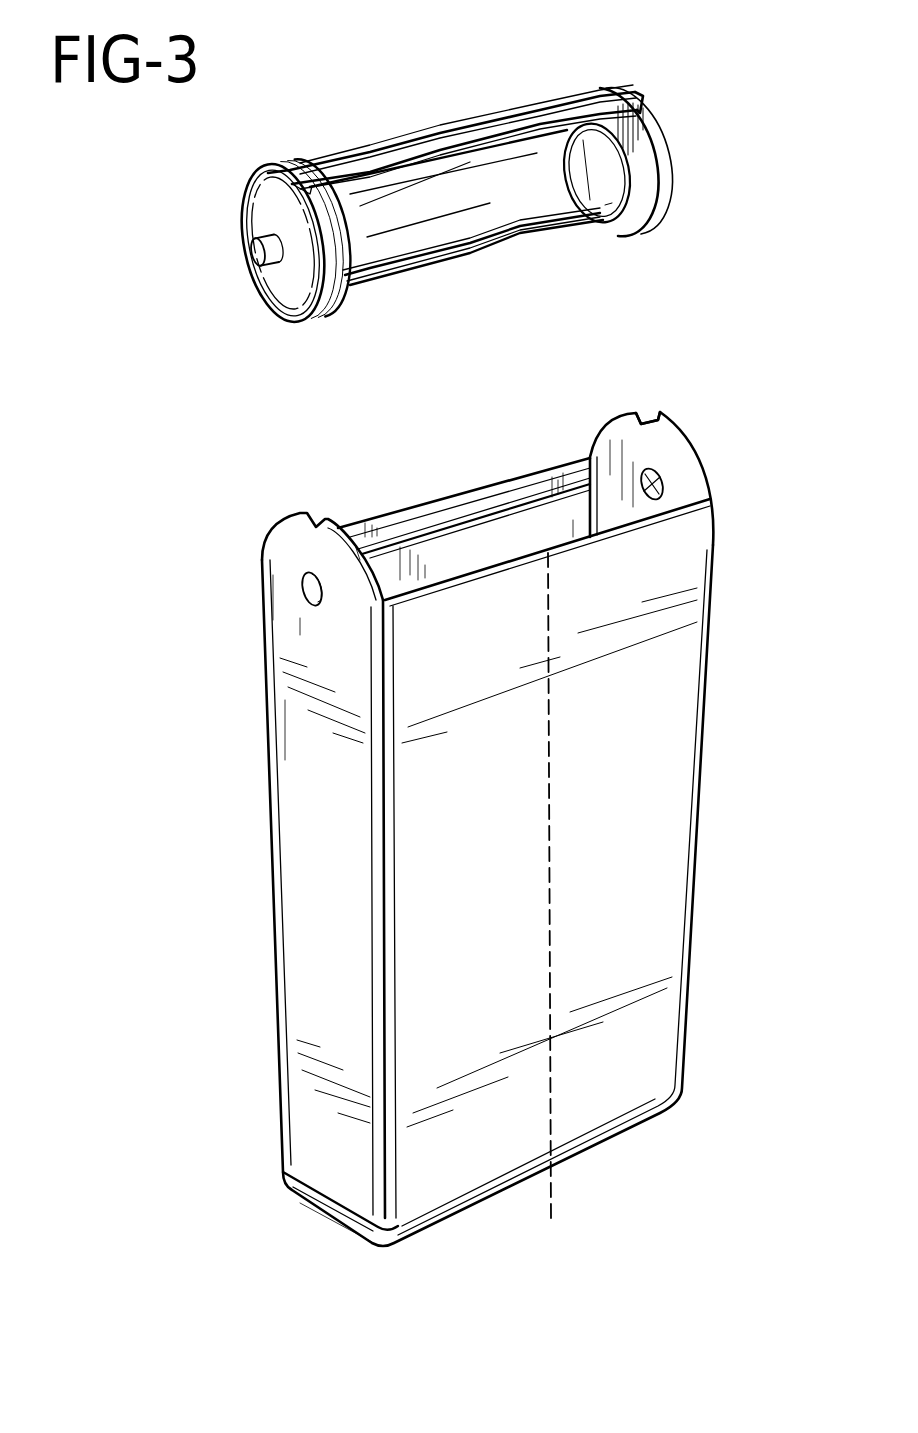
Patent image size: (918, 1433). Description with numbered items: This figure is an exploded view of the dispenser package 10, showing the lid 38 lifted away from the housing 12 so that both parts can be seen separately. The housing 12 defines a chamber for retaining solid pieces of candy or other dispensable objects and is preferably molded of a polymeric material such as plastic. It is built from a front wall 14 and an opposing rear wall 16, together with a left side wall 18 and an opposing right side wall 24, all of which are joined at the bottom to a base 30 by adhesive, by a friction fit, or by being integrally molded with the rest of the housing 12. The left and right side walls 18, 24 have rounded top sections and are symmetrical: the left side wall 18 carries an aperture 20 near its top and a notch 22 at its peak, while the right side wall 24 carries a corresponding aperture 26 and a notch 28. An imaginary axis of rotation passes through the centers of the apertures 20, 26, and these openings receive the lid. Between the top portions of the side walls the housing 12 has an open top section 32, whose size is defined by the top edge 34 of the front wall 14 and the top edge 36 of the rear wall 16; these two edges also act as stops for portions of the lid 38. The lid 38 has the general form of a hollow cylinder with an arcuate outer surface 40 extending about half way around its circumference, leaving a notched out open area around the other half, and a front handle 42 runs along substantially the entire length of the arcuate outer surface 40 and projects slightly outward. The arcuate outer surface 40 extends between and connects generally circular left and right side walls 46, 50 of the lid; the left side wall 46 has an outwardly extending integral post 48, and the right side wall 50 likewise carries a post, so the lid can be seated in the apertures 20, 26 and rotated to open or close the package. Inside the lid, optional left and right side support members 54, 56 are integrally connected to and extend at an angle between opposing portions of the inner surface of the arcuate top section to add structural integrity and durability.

The dispenser package 10 is at (98, 181).
The housing 12 is at (666, 669).
The front wall 14 is at (658, 878).
The rear wall 16 is at (417, 567).
The left side wall 18 is at (307, 1131).
The aperture 20 is at (307, 600).
The notch 22 is at (316, 515).
The right side wall 24 is at (665, 450).
The aperture 26 is at (663, 481).
The notch 28 is at (648, 419).
The base 30 is at (603, 1141).
The open top section 32 is at (519, 198).
The top edge 34 is at (580, 538).
The top edge 36 is at (470, 492).
The lid 38 is at (439, 278).
The arcuate outer surface 40 is at (433, 137).
The front handle 42 is at (633, 95).
The left side wall 46 is at (293, 290).
The post 48 is at (252, 259).
The right side wall 50 is at (667, 200).
The left side support member 54 is at (350, 275).
The right side support member 56 is at (603, 183).